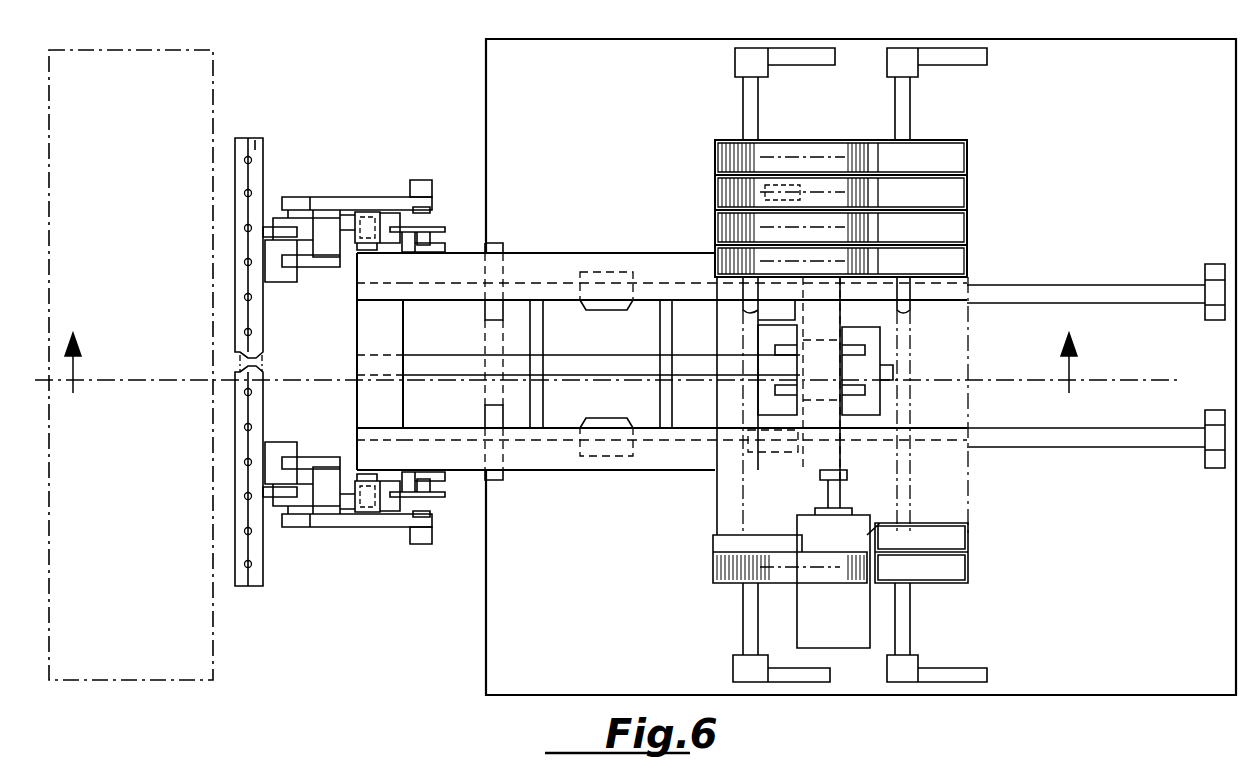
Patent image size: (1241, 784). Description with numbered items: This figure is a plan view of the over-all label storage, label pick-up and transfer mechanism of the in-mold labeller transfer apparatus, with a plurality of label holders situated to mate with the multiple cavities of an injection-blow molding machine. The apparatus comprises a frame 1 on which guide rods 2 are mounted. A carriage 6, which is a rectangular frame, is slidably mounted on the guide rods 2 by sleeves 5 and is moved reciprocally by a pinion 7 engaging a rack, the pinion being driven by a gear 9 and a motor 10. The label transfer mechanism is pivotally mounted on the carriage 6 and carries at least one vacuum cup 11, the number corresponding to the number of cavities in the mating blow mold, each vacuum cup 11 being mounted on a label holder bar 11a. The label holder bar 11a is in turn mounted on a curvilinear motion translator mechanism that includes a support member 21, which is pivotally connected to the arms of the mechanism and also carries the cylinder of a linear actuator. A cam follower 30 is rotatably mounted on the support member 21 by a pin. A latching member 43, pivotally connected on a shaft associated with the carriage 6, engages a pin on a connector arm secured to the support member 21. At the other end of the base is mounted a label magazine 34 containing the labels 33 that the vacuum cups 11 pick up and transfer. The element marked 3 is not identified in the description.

The frame 1 is at (573, 353).
The guide rods 2 is at (1040, 290).
The carriage 3 is at (398, 248).
The sleeves 5 is at (608, 308).
The carriage 6 is at (560, 462).
The pinion 7 is at (780, 373).
The gear 9 is at (850, 372).
The motor 10 is at (848, 638).
The vacuum cup 11 is at (251, 160).
The label holder bar 11a is at (257, 142).
The support member 21 is at (340, 200).
The cam follower 30 is at (420, 182).
The labels 33 is at (725, 160).
The label magazine 34 is at (940, 155).
The latching member 43 is at (437, 228).